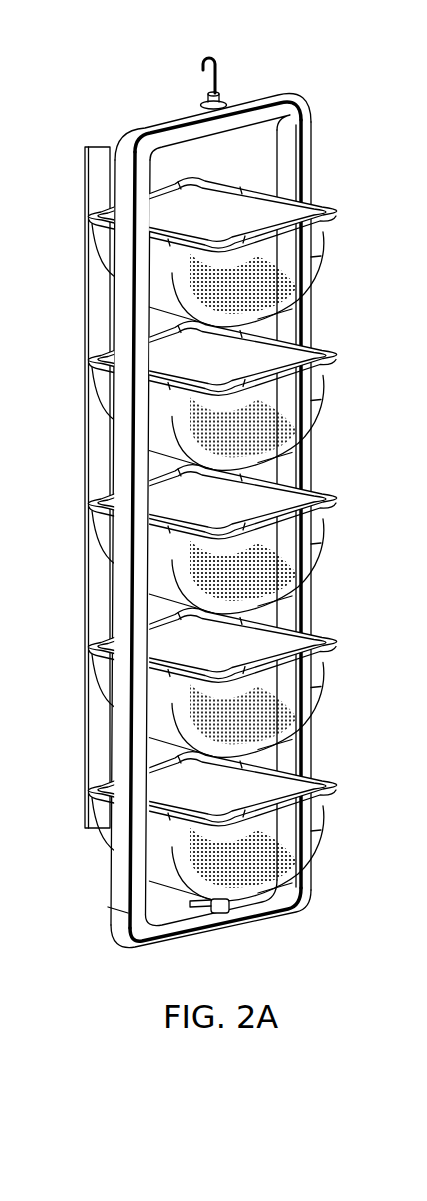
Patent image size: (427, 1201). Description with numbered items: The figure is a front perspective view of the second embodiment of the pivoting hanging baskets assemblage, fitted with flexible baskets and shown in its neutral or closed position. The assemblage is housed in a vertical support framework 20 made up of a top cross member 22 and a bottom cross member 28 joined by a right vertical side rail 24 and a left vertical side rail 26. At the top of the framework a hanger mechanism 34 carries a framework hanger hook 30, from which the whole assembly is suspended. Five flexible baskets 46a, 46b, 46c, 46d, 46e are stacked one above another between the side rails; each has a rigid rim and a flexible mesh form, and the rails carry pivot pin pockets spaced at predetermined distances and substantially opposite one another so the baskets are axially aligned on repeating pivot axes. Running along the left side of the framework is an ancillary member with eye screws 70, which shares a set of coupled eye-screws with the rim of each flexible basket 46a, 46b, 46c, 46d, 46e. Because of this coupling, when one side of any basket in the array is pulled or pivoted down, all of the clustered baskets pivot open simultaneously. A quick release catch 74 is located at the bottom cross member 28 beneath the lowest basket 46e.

The vertical support framework 20 is at (262, 529).
The top cross member 22 is at (160, 120).
The right vertical side rail 24 is at (310, 603).
The left vertical side rail 26 is at (352, 505).
The bottom cross member 28 is at (178, 938).
The framework hanger hook 30 is at (223, 58).
The hanger mechanism 34 is at (227, 95).
The flexible basket 46a is at (333, 200).
The flexible basket 46b is at (338, 347).
The flexible basket 46c is at (336, 495).
The flexible basket 46d is at (330, 640).
The flexible basket 46e is at (337, 777).
The ancillary member with eye screws 70 is at (98, 150).
The quick release catch 74 is at (226, 916).